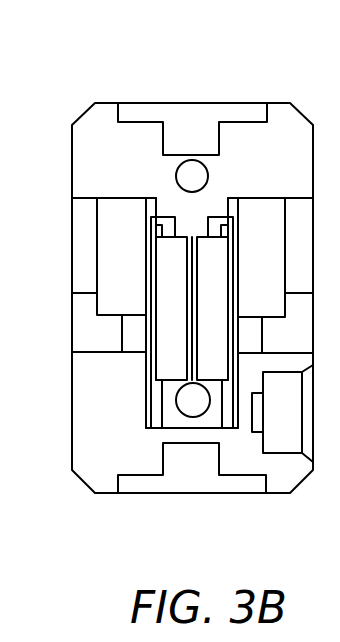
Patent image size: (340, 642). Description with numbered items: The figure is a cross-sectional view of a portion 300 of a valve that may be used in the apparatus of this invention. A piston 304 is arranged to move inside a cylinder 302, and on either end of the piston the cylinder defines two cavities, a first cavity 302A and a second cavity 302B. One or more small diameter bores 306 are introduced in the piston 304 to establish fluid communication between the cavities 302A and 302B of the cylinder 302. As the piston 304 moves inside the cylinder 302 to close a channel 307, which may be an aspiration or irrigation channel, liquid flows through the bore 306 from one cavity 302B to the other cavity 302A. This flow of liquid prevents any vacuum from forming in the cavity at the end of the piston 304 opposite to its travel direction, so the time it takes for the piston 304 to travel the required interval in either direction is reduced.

The portion of a valve 300 is at (58, 78).
The cylinder 302 is at (225, 407).
The cavity 302A is at (157, 222).
The cavity 302B is at (175, 420).
The piston 304 is at (162, 332).
The small diameter bore 306 is at (188, 355).
The channel 307 is at (193, 399).